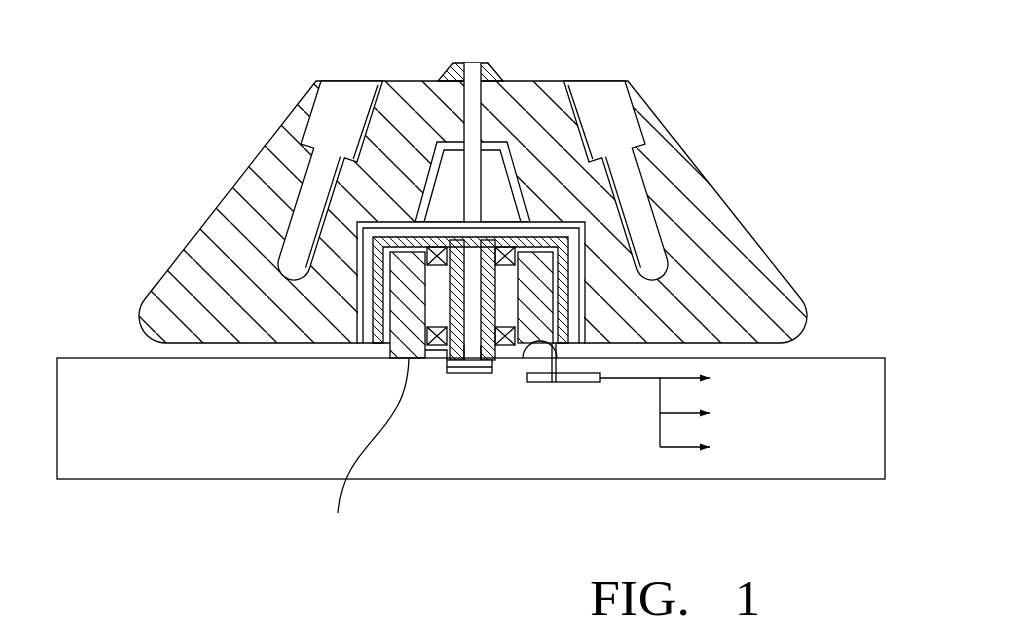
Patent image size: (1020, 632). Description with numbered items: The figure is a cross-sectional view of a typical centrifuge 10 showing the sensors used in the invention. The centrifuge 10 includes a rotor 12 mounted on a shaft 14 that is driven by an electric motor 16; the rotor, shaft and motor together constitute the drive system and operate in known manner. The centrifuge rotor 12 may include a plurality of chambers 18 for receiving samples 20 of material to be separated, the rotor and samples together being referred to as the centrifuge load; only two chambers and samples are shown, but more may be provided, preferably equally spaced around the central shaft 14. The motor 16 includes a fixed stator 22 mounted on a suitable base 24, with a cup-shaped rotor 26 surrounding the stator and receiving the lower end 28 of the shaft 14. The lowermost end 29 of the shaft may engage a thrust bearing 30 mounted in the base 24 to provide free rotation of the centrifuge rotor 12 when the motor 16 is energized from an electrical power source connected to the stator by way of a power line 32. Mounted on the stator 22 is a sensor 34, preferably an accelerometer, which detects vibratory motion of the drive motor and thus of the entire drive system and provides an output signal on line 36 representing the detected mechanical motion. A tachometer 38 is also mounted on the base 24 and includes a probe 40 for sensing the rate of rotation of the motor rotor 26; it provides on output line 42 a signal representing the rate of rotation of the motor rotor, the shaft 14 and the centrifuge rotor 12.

The centrifuge 10 is at (503, 259).
The rotor 12 is at (740, 240).
The shaft 14 is at (490, 107).
The electric motor 16 is at (433, 377).
The chambers 18 is at (360, 80).
The samples 20 is at (287, 182).
The stator 22 is at (533, 288).
The base 24 is at (562, 467).
The cup-shaped rotor 26 is at (383, 320).
The lower end of shaft 28 is at (450, 373).
The lowermost end of shaft 29 is at (470, 368).
The thrust bearing 30 is at (456, 375).
The power line 32 is at (355, 452).
The sensor 34 is at (542, 380).
The output line 36 is at (680, 448).
The tachometer 38 is at (580, 383).
The probe 40 is at (522, 360).
The output line 42 is at (673, 412).